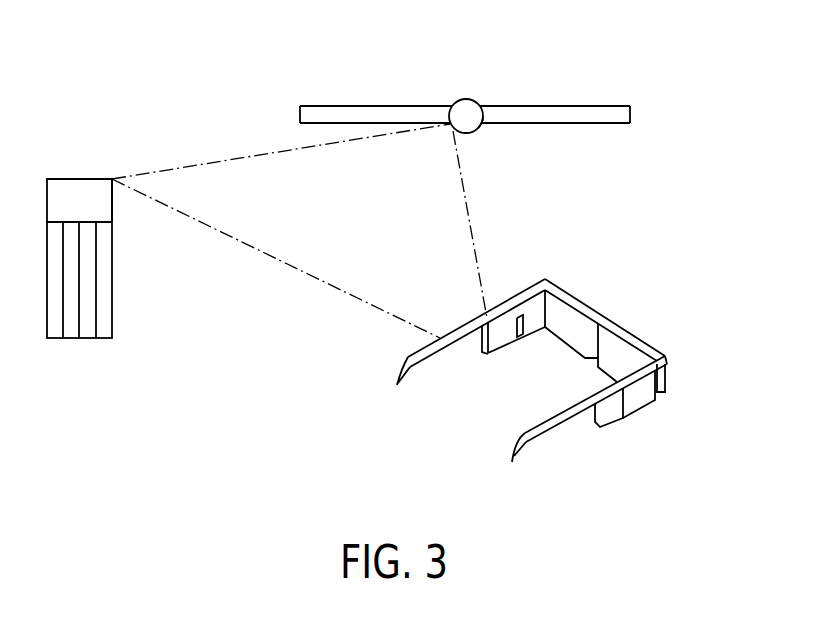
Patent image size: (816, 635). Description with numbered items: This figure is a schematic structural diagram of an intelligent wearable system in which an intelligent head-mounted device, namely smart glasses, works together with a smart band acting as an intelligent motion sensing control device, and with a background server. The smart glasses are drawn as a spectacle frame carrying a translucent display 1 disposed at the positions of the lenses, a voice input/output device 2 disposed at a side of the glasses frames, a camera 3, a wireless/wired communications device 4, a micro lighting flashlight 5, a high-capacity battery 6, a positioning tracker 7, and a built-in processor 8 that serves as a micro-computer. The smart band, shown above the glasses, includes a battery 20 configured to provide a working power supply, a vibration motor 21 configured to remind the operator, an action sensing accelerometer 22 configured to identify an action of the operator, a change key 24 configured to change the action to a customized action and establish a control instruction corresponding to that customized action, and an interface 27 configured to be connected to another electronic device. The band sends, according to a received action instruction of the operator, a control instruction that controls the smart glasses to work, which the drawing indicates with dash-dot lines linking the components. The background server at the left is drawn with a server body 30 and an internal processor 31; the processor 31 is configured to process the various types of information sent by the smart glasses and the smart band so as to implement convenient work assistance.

The translucent display 1 is at (668, 360).
The voice input/output device 2 is at (547, 278).
The camera 3 is at (643, 390).
The wireless/wired communications device 4 is at (612, 407).
The micro lighting flashlight 5 is at (543, 328).
The high-capacity battery 6 is at (520, 314).
The positioning tracker 7 is at (608, 320).
The built-in processor 8 is at (488, 355).
The battery 20 is at (466, 116).
The vibration motor 21 is at (450, 107).
The action sensing accelerometer 22 is at (453, 123).
The change key 24 is at (482, 125).
The interface 27 is at (485, 107).
The server body 30 is at (70, 200).
The internal processor 31 is at (112, 179).